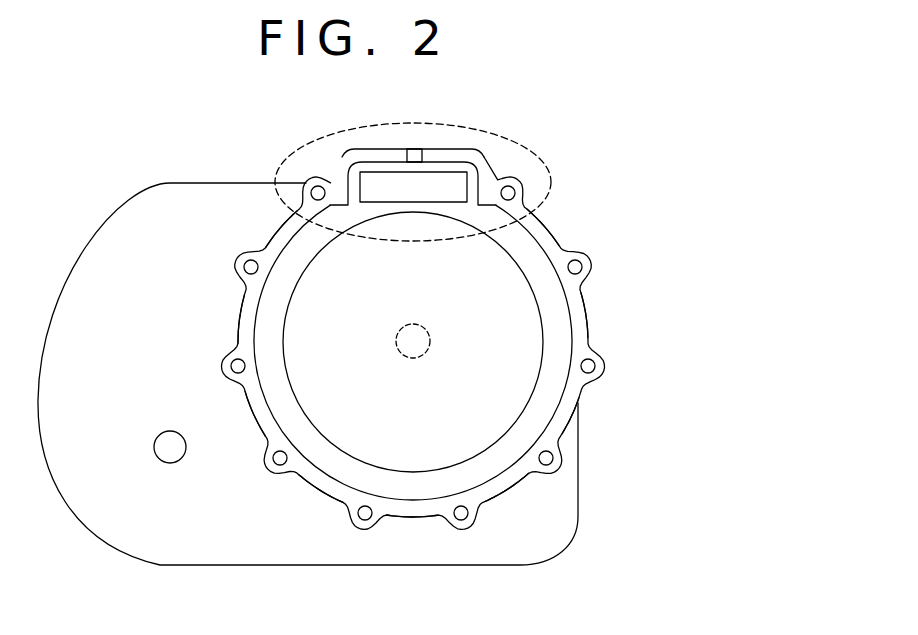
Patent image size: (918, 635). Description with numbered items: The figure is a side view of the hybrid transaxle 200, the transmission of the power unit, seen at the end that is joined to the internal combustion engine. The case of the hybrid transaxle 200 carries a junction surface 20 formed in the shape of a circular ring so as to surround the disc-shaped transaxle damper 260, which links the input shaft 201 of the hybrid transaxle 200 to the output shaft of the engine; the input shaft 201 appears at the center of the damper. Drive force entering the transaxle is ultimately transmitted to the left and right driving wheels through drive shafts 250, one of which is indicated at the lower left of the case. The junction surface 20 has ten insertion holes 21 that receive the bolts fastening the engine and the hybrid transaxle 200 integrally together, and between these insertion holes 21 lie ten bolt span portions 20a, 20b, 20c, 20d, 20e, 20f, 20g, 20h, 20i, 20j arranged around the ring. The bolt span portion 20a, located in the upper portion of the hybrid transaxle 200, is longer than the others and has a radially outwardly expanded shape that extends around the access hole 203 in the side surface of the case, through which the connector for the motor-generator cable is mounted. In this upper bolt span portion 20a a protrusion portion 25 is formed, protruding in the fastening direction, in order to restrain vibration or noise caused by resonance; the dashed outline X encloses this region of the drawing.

The hybrid transaxle 200 is at (165, 183).
The drive shafts 250 is at (155, 448).
The junction surface 20 is at (548, 228).
The bolt span portion 20a is at (373, 146).
The bolt span portion 20b is at (570, 230).
The bolt span portion 20c is at (602, 326).
The bolt span portion 20d is at (580, 430).
The bolt span portion 20e is at (508, 503).
The bolt span portion 20f is at (414, 525).
The bolt span portion 20g is at (302, 497).
The bolt span portion 20h is at (236, 420).
The bolt span portion 20i is at (219, 311).
The bolt span portion 20j is at (270, 219).
The insertion holes 21 is at (318, 186).
The protrusion portion 25 is at (418, 147).
The input shaft 201 is at (431, 339).
The access hole 203 is at (381, 198).
The transaxle damper 260 is at (541, 303).
The region X is at (493, 132).